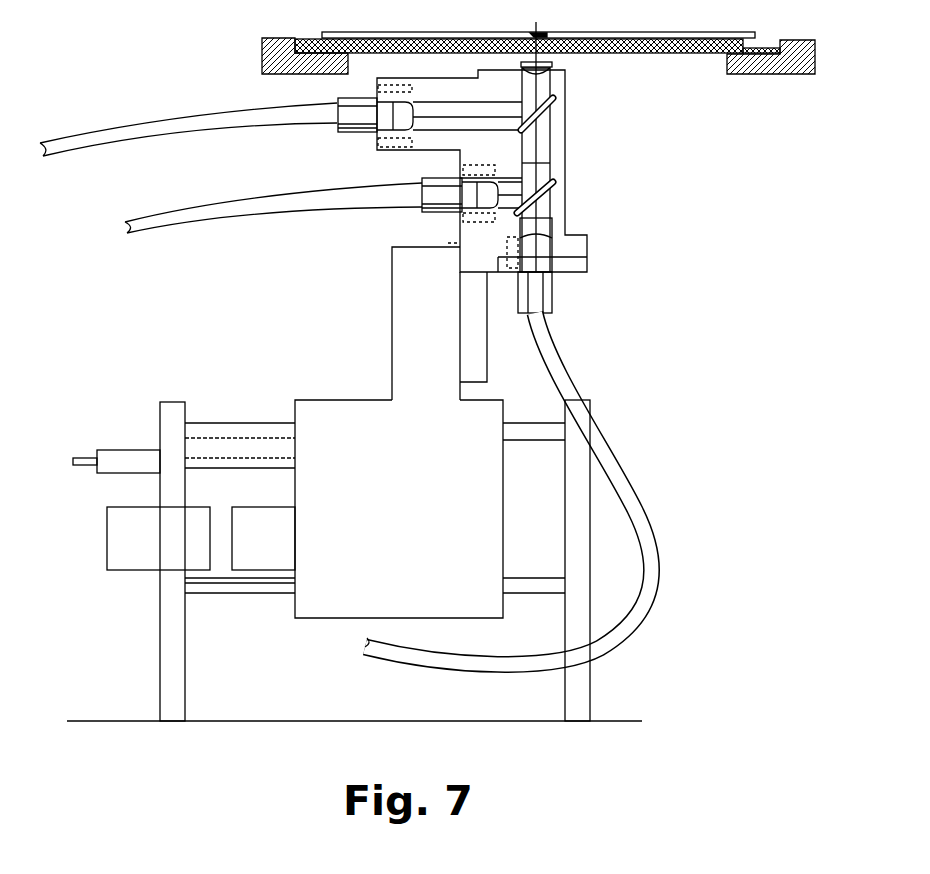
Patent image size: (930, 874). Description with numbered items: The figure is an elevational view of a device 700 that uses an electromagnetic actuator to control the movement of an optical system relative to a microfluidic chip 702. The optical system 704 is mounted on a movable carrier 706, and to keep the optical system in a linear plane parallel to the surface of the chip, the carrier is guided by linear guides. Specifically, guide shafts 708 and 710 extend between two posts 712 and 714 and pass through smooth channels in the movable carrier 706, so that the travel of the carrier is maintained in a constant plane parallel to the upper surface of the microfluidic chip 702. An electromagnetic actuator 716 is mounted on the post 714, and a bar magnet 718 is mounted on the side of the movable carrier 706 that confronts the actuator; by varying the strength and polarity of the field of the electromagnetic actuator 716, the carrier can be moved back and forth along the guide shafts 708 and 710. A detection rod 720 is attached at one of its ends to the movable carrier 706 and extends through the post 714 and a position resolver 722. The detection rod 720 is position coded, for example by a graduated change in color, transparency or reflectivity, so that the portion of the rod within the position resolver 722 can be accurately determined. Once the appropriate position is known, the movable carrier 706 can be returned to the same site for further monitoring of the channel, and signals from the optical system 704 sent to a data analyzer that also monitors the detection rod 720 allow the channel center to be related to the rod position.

The device 700 is at (683, 270).
The microfluidic chip 702 is at (603, 32).
The optical system 704 is at (567, 143).
The movable carrier 706 is at (385, 507).
The guide shaft 708 is at (251, 428).
The guide shaft 710 is at (227, 594).
The post 712 is at (590, 690).
The post 714 is at (162, 682).
The electromagnetic actuator 716 is at (107, 556).
The bar magnet 718 is at (260, 508).
The detection rod 720 is at (221, 460).
The position resolver 722 is at (138, 450).